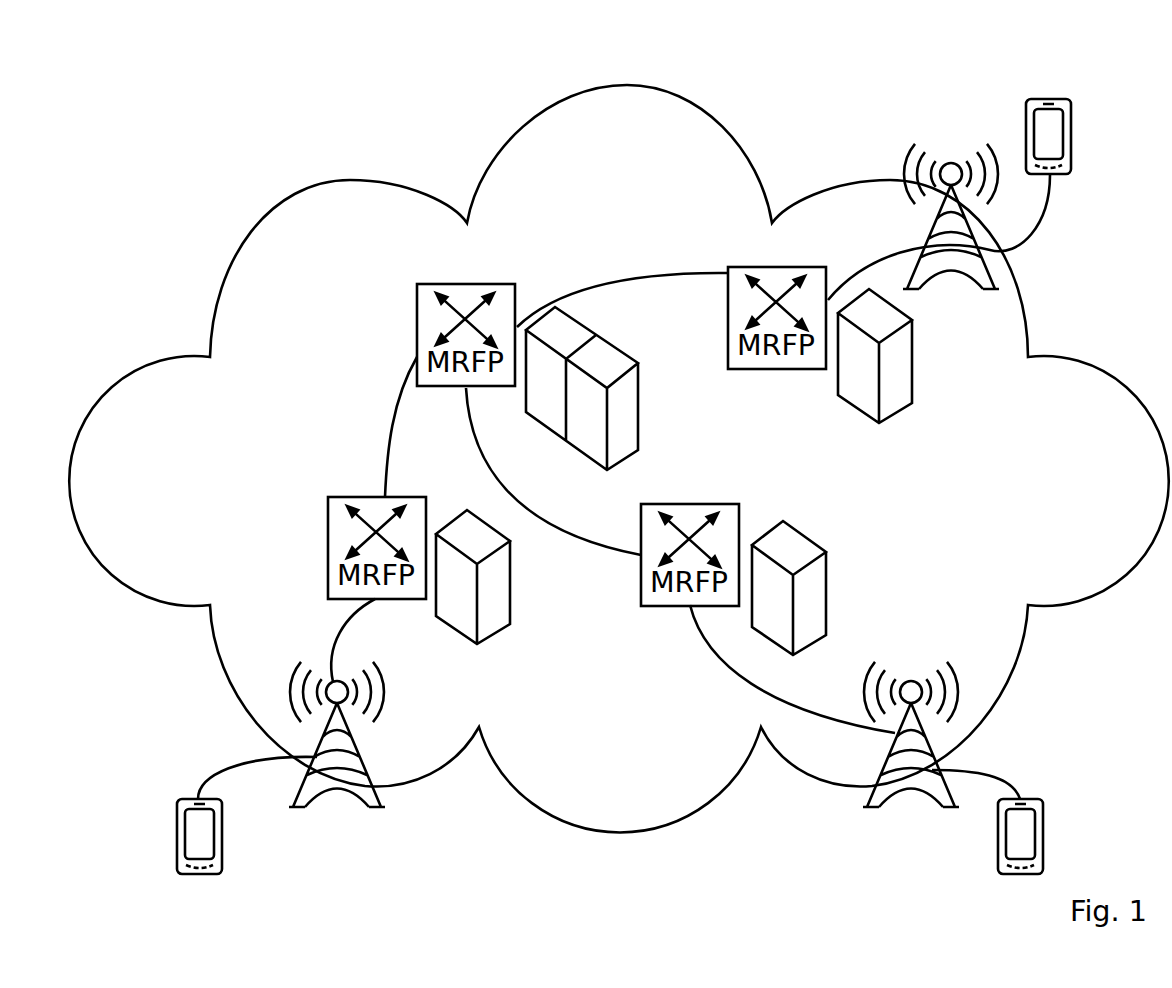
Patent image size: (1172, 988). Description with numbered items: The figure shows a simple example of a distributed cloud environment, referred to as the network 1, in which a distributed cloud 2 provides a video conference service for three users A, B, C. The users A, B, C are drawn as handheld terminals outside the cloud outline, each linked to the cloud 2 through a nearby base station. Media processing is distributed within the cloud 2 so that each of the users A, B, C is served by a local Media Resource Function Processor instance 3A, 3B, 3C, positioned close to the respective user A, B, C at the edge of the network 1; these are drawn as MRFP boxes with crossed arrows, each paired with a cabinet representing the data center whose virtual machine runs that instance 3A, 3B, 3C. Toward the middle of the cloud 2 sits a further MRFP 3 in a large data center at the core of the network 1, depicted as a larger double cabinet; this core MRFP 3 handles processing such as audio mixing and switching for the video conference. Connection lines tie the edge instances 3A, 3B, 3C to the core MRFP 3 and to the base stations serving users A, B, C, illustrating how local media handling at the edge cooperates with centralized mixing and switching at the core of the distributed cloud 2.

The network 1 is at (930, 50).
The distributed cloud 2 is at (618, 117).
The MRFP 3 is at (465, 284).
The MRFP instance 3A is at (378, 497).
The MRFP instance 3B is at (689, 504).
The MRFP instance 3C is at (777, 267).
The user A is at (222, 837).
The user B is at (1043, 836).
The user C is at (1070, 132).